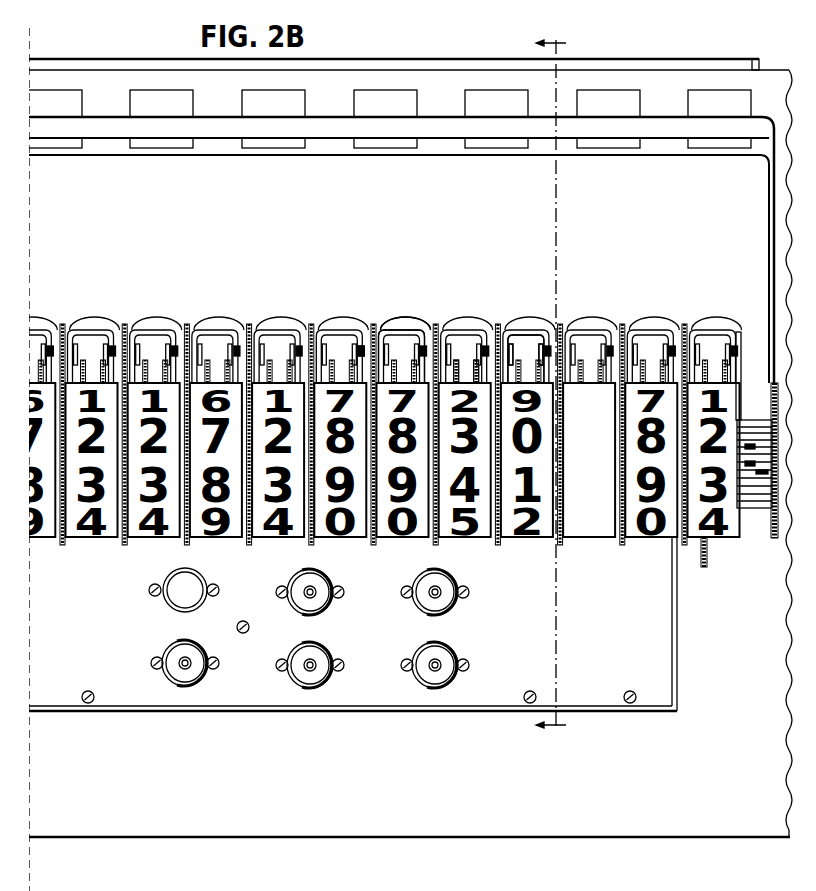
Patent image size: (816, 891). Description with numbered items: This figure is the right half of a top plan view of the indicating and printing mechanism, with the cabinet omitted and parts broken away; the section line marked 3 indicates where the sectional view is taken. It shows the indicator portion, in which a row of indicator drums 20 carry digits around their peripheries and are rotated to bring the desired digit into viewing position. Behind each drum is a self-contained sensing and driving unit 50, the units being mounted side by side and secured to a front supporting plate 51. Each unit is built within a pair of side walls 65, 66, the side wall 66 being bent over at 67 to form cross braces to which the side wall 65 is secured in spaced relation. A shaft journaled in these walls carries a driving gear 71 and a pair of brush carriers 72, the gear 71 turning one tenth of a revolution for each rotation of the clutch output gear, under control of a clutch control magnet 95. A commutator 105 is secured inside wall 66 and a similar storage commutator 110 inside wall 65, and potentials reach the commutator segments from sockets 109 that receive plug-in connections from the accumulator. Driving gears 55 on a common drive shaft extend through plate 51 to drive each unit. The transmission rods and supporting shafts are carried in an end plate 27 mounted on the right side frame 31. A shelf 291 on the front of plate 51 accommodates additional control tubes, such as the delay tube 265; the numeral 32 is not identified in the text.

The sockets 109 is at (252, 99).
The commutator 110 is at (358, 350).
The commutator 105 is at (383, 337).
The clutch control magnet 95 is at (402, 321).
The driving gear 71 is at (436, 324).
The brush carriers 72 is at (457, 362).
The side wall 66 is at (505, 343).
The bent-over portion 67 is at (530, 333).
The side wall 65 is at (557, 331).
The unit 50 is at (598, 321).
The right side frame 31 is at (768, 322).
The indicator drum 20 is at (605, 540).
The front supporting plate 51 is at (752, 508).
The driving gears 55 is at (704, 567).
The end plate 27 is at (775, 543).
The delay tube 265 is at (212, 678).
The shelf 291 is at (297, 703).
The base plate 32 is at (409, 851).
The section line 3 is at (551, 388).